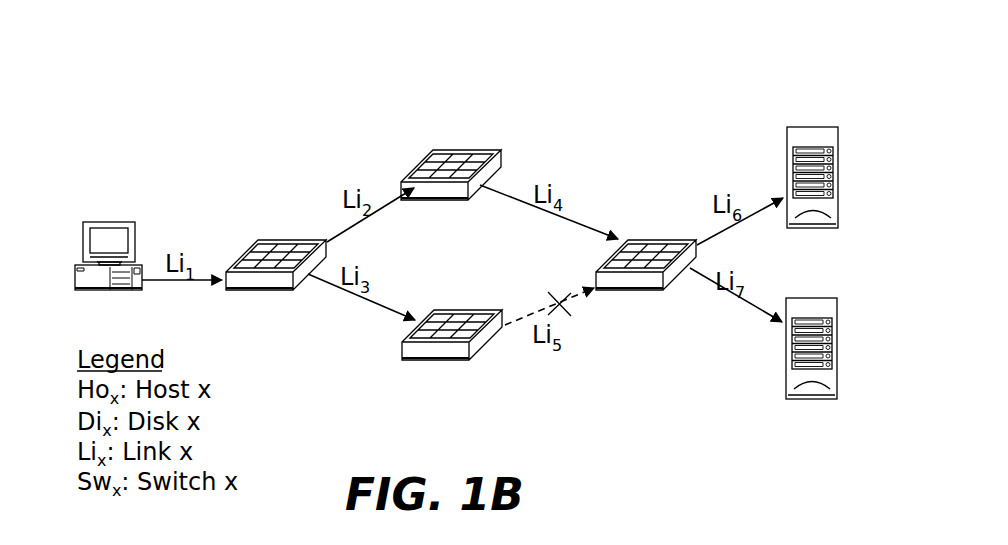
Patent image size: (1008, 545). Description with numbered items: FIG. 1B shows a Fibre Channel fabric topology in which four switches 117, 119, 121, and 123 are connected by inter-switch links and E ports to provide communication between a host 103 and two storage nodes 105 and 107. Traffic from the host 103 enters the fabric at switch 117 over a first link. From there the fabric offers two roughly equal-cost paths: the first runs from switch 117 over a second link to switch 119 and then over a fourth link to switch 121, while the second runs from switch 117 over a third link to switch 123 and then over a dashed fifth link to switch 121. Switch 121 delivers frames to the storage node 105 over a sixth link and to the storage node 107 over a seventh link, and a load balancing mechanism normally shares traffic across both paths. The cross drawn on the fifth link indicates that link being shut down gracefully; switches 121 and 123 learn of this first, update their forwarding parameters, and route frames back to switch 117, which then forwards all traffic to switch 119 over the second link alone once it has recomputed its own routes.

The host 103 is at (83, 239).
The storage node 105 is at (829, 126).
The storage node 107 is at (815, 298).
The switch 117 is at (300, 277).
The switch 119 is at (474, 182).
The switch 121 is at (668, 273).
The switch 123 is at (474, 342).